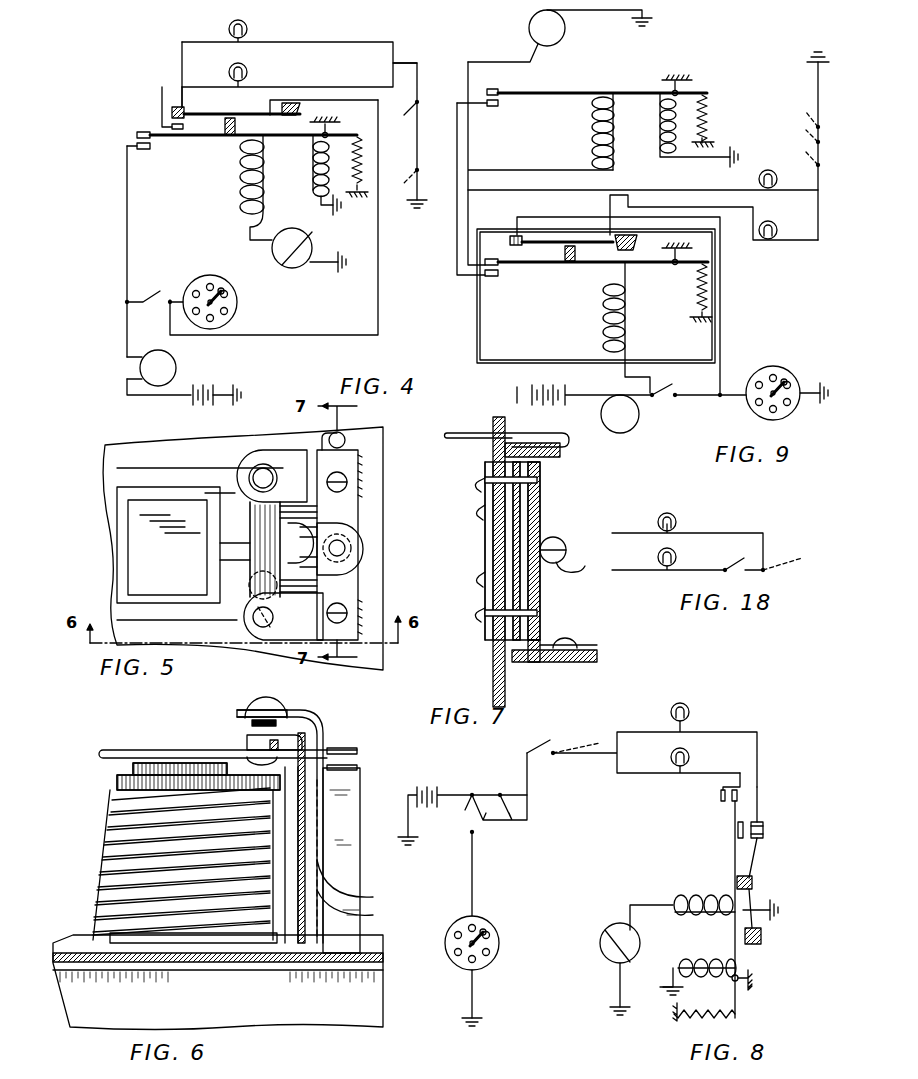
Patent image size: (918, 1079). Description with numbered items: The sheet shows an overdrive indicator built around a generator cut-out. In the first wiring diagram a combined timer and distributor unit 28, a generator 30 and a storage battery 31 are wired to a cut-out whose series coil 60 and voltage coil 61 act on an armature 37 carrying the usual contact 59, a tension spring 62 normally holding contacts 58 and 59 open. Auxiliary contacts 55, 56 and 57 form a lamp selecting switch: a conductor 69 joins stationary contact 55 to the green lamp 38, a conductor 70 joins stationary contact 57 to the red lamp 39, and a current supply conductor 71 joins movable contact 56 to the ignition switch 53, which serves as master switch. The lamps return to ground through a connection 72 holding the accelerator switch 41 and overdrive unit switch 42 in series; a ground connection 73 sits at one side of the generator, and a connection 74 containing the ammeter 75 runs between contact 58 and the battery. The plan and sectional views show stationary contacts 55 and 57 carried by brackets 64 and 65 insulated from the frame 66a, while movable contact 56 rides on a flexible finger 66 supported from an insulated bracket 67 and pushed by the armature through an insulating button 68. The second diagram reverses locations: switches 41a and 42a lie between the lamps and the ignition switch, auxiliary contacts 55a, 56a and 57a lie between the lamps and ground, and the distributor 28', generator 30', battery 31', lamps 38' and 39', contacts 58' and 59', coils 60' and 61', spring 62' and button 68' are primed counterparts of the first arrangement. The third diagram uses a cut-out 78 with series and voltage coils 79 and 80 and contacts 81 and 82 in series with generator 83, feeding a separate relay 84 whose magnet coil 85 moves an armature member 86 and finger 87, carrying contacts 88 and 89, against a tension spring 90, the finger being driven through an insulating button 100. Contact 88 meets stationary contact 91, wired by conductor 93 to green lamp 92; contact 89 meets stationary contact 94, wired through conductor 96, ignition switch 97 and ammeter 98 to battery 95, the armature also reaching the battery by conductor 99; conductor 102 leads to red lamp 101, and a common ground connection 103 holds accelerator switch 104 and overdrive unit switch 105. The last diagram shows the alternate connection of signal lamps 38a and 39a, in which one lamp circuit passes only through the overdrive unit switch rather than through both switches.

In FIG. 4, the combined timer and distributor unit 28 is at (217, 302).
In FIG. 4, the generator 30 is at (276, 248).
In FIG. 4, the storage battery 31 is at (184, 398).
In FIG. 4, the armature 37 is at (223, 137).
In FIG. 5, the armature 37 is at (177, 458).
In FIG. 6, the armature 37 is at (176, 748).
In FIG. 4, the green lamp 38 is at (246, 72).
In FIG. 4, the red lamp 39 is at (246, 29).
In FIG. 4, the accelerator switch 41 is at (410, 110).
In FIG. 4, the overdrive unit switch 42 is at (414, 159).
In FIG. 4, the ignition switch 53 is at (144, 300).
In FIG. 4, the stationary contact 55 is at (172, 127).
In FIG. 5, the stationary contact 55 is at (249, 627).
In FIG. 6, the stationary contact 55 is at (247, 736).
In FIG. 4, the movable contact 56 is at (172, 110).
In FIG. 5, the movable contact 56 is at (283, 616).
In FIG. 6, the movable contact 56 is at (252, 723).
In FIG. 4, the stationary contact 57 is at (162, 90).
In FIG. 6, the stationary contact 57 is at (240, 712).
In FIG. 4, the stationary contact 58 is at (142, 155).
In FIG. 6, the stationary contact 58 is at (360, 770).
In FIG. 4, the contact 59 is at (125, 129).
In FIG. 5, the contact 59 is at (345, 545).
In FIG. 6, the contact 59 is at (360, 749).
In FIG. 4, the series coil 60 is at (267, 187).
In FIG. 6, the series coil 60 is at (179, 853).
In FIG. 4, the voltage coil 61 is at (311, 175).
In FIG. 4, the tension spring 62 is at (361, 154).
In FIG. 5, the bracket 64 is at (268, 642).
In FIG. 6, the bracket 64 is at (312, 716).
In FIG. 6, the bracket 65 is at (323, 734).
In FIG. 4, the flexible finger 66 is at (233, 106).
In FIG. 5, the flexible finger 66 is at (265, 532).
In FIG. 6, the frame 66a is at (237, 952).
In FIG. 5, the insulated bracket 67 is at (244, 457).
In FIG. 4, the insulating button 68 is at (254, 128).
In FIG. 5, the insulating button 68 is at (249, 579).
In FIG. 6, the insulating button 68 is at (276, 727).
In FIG. 4, the conductor 69 is at (180, 88).
In FIG. 6, the conductor 69 is at (356, 908).
In FIG. 4, the conductor 70 is at (182, 52).
In FIG. 6, the conductor 70 is at (356, 882).
In FIG. 4, the current supply conductor 71 is at (400, 314).
In FIG. 7, the current supply conductor 71 is at (472, 425).
In FIG. 5, the current supply conductor 71 is at (342, 443).
In FIG. 4, the ground connection 72 is at (418, 52).
In FIG. 4, the ground connection 73 is at (330, 258).
In FIG. 4, the connection 74 is at (127, 244).
In FIG. 7, the connection 74 is at (606, 560).
In FIG. 4, the ammeter 75 is at (176, 367).
In FIG. 9, the cut-out 78 is at (648, 88).
In FIG. 9, the series coil 79 is at (589, 132).
In FIG. 9, the voltage coil 80 is at (654, 138).
In FIG. 9, the cut-out contact 81 is at (510, 80).
In FIG. 9, the cut-out contact 82 is at (484, 112).
In FIG. 9, the generator 83 is at (565, 20).
In FIG. 9, the relay 84 is at (555, 339).
In FIG. 9, the magnet coil 85 is at (632, 302).
In FIG. 9, the armature member 86 is at (560, 268).
In FIG. 9, the finger 87 is at (543, 238).
In FIG. 9, the contact 88 is at (498, 264).
In FIG. 9, the contact 89 is at (523, 246).
In FIG. 9, the tension spring 90 is at (697, 296).
In FIG. 9, the stationary contact 91 is at (490, 276).
In FIG. 9, the green lamp 92 is at (766, 172).
In FIG. 9, the conductor 93 is at (678, 188).
In FIG. 9, the stationary contact 94 is at (507, 232).
In FIG. 9, the battery 95 is at (561, 386).
In FIG. 9, the conductor 96 is at (722, 376).
In FIG. 9, the ignition switch 97 is at (675, 384).
In FIG. 9, the ammeter 98 is at (642, 415).
In FIG. 9, the conductor 99 is at (636, 270).
In FIG. 9, the insulating button 100 is at (576, 262).
In FIG. 9, the red lamp 101 is at (779, 220).
In FIG. 9, the conductor 102 is at (610, 197).
In FIG. 9, the common ground connection 103 is at (810, 177).
In FIG. 9, the accelerator switch 104 is at (798, 134).
In FIG. 9, the overdrive unit switch 105 is at (798, 116).
In FIG. 18, the signal lamp 38a is at (678, 550).
In FIG. 18, the red lamp 39a is at (678, 515).
In FIG. 18, the accelerator switch 41a is at (732, 570).
In FIG. 8, the accelerator switch 41a is at (545, 746).
In FIG. 18, the overdrive unit switch 42a is at (792, 570).
In FIG. 8, the overdrive unit switch 42a is at (590, 748).
In FIG. 8, the combined timer and distributor unit 28' is at (491, 929).
In FIG. 8, the generator 30' is at (610, 963).
In FIG. 8, the storage battery 31' is at (462, 805).
In FIG. 8, the green lamp 38' is at (692, 756).
In FIG. 8, the red lamp 39' is at (692, 712).
In FIG. 8, the stationary contact 55a is at (738, 832).
In FIG. 8, the movable contact 56a is at (763, 822).
In FIG. 8, the stationary contact 57a is at (763, 836).
In FIG. 8, the stationary contact 58' is at (726, 902).
In FIG. 8, the contact 59' is at (717, 787).
In FIG. 8, the series coil 60' is at (704, 901).
In FIG. 8, the voltage coil 61' is at (698, 966).
In FIG. 8, the tension spring 62' is at (724, 1015).
In FIG. 8, the insulating button 68' is at (768, 905).